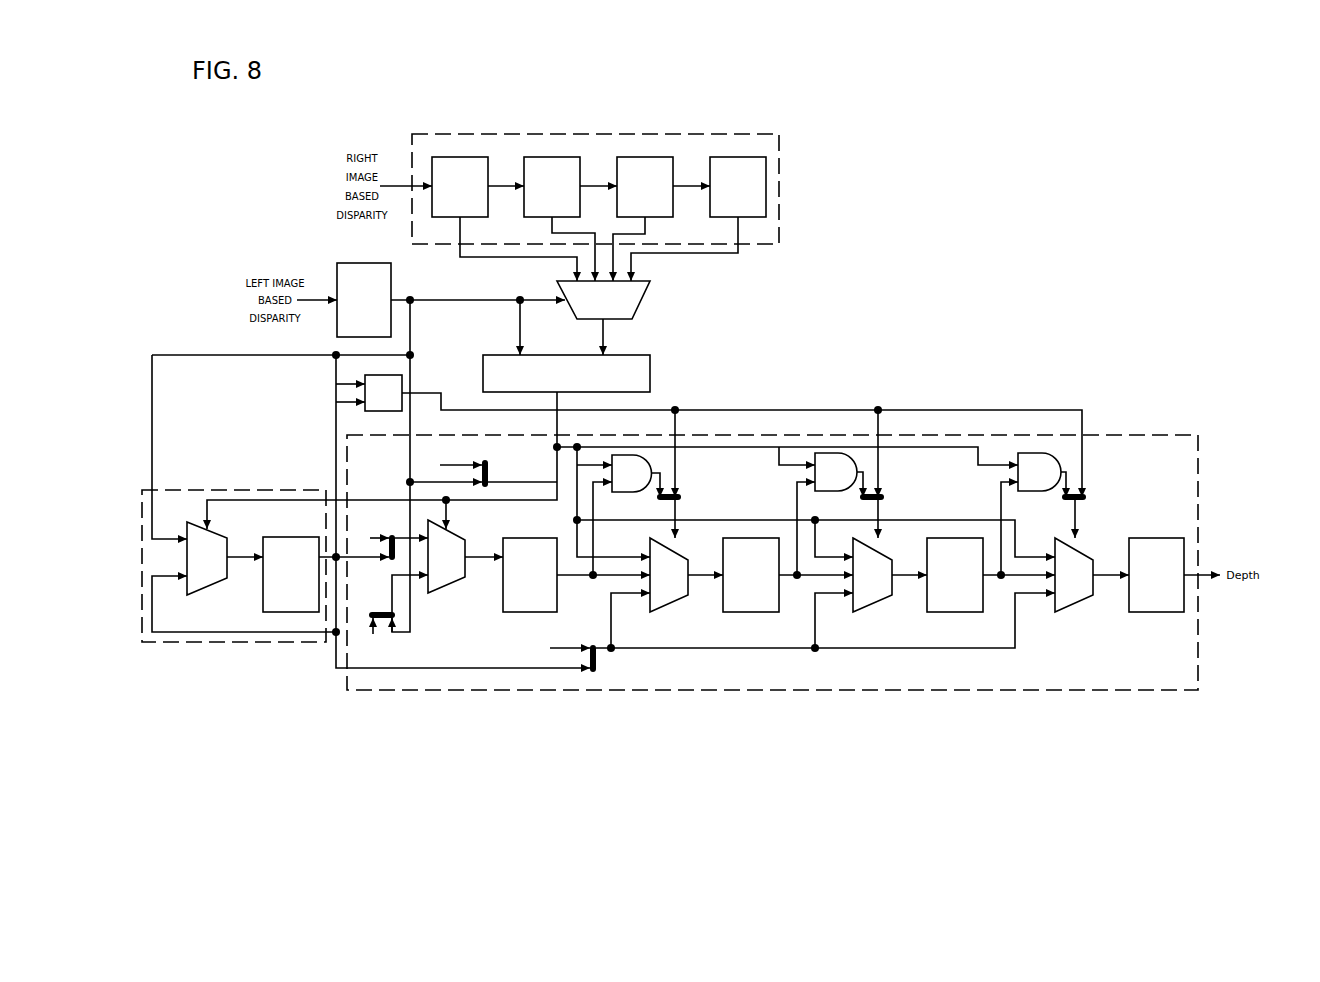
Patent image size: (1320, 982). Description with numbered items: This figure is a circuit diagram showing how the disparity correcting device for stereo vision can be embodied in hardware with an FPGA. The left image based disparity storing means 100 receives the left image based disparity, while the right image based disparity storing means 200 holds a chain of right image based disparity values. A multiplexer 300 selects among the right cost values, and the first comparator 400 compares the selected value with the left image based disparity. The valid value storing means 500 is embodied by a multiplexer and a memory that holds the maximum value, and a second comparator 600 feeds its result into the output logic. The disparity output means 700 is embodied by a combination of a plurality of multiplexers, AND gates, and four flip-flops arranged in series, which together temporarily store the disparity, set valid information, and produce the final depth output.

The left image based disparity storing means 100 is at (334, 262).
The right image based disparity storing means 200 is at (779, 155).
The multiplexer 300 is at (652, 290).
The first comparator 400 is at (652, 366).
The valid value storing means 500 is at (230, 648).
The second comparator 600 is at (362, 393).
The disparity output means 700 is at (771, 693).